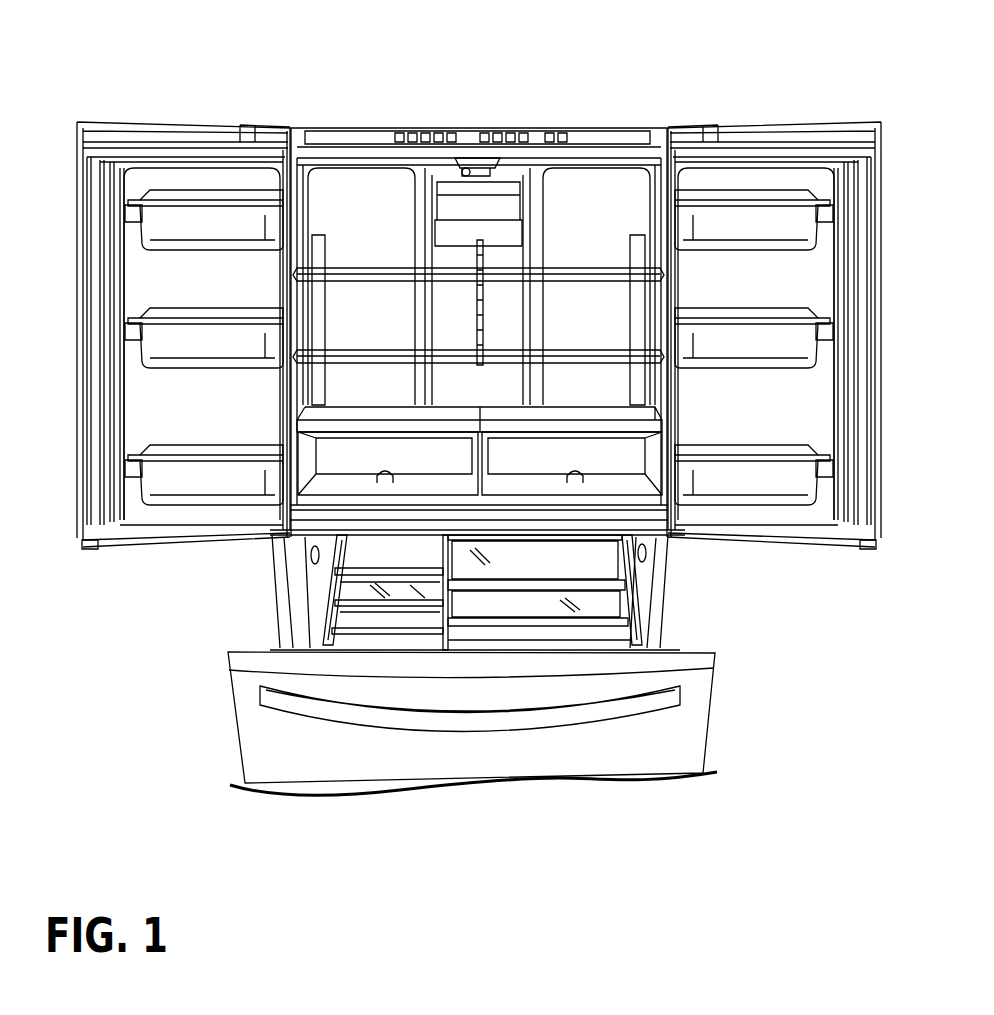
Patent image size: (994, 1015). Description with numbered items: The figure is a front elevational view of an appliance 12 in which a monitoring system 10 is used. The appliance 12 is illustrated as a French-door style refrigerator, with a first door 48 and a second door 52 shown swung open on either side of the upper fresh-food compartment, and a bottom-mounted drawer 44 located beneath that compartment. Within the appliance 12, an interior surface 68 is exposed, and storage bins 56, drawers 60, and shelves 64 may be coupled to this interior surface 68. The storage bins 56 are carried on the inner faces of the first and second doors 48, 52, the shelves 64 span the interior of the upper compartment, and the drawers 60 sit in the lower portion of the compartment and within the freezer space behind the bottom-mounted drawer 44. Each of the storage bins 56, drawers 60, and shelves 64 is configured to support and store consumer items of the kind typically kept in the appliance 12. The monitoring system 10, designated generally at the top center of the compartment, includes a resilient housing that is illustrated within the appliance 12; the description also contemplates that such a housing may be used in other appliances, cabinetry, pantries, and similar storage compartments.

The appliance 12 is at (124, 76).
The monitoring system 10 is at (486, 162).
The first door 48 is at (185, 125).
The second door 52 is at (768, 125).
The storage bins 56 is at (155, 232).
The interior surface 68 is at (580, 187).
The shelves 64 is at (368, 352).
The drawers 60 is at (605, 483).
The bottom-mounted drawer 44 is at (635, 738).